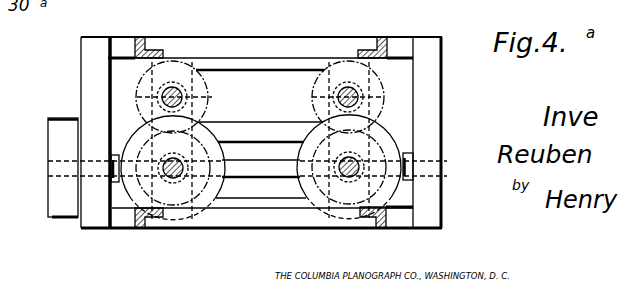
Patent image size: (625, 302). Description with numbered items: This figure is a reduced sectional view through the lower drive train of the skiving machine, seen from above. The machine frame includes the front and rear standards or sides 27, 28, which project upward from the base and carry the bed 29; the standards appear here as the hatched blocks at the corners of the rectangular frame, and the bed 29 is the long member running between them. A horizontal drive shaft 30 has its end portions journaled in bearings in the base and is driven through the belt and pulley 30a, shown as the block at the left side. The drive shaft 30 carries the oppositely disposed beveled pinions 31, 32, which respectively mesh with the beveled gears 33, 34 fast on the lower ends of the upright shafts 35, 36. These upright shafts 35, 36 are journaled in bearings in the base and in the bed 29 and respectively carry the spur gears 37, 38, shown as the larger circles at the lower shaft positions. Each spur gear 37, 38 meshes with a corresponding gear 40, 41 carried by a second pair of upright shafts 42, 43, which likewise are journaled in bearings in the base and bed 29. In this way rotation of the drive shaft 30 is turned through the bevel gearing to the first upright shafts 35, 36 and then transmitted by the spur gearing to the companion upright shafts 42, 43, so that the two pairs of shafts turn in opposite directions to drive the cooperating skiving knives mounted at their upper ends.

The front standard 27 is at (386, 228).
The rear standard 28 is at (382, 37).
The bed 29 is at (304, 37).
The drive shaft 30 is at (268, 177).
The belt and pulley 30a is at (43, 167).
The beveled pinion 31 is at (115, 153).
The beveled pinion 32 is at (395, 184).
The beveled gear 33 is at (122, 188).
The beveled gear 34 is at (396, 201).
The upright shaft 35 is at (160, 195).
The upright shaft 36 is at (353, 165).
The spur gear 37 is at (150, 192).
The spur gear 38 is at (404, 189).
The gear 40 is at (211, 97).
The gear 41 is at (312, 97).
The upright shaft 42 is at (174, 90).
The upright shaft 43 is at (352, 96).